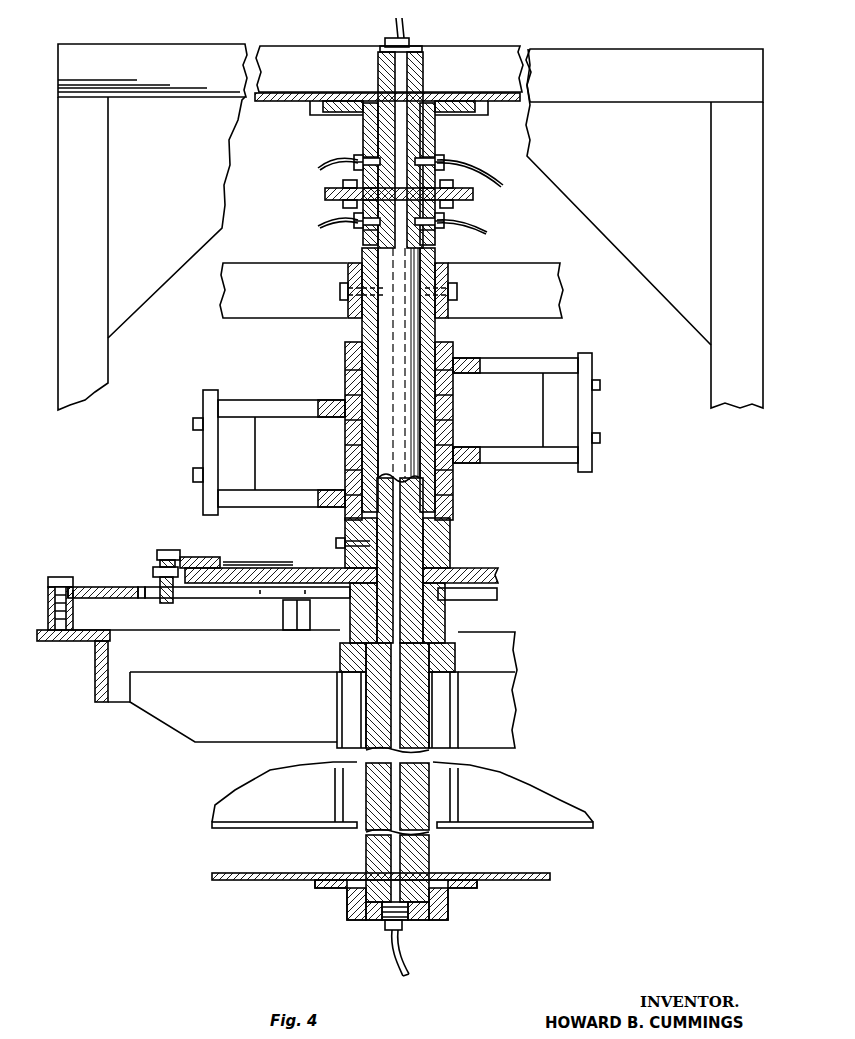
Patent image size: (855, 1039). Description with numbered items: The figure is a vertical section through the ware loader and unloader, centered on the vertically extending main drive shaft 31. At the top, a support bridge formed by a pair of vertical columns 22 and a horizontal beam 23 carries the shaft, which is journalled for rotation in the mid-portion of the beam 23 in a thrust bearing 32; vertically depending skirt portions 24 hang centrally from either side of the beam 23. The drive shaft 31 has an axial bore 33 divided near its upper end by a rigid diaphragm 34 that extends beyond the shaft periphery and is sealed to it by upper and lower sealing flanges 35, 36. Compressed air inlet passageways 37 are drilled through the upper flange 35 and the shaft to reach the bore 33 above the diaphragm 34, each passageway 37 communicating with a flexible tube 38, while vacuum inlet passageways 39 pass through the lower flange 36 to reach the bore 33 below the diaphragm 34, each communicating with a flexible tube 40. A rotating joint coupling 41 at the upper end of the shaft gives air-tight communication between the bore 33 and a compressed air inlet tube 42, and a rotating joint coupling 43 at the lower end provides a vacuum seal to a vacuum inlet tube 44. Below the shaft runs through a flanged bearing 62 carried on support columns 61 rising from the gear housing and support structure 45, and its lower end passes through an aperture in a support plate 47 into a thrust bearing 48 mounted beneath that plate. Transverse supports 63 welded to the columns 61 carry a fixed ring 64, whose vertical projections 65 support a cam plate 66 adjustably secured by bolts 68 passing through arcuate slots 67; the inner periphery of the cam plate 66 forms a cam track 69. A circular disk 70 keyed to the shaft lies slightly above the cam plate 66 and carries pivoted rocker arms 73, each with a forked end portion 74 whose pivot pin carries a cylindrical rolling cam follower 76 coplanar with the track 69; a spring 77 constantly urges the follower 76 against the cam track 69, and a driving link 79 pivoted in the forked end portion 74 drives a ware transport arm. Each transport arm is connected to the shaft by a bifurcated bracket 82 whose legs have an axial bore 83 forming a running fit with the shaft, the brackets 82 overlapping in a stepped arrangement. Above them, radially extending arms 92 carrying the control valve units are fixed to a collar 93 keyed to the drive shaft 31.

The vertical columns 22 is at (108, 366).
The horizontal beam 23 is at (317, 46).
The skirt portions 24 is at (312, 103).
The main drive shaft 31 is at (378, 252).
The thrust bearing 32 is at (364, 128).
The axial bore 33 is at (405, 146).
The rigid diaphragm 34 is at (372, 185).
The upper sealing flange 35 is at (455, 187).
The lower sealing flange 36 is at (462, 202).
The compressed air inlet passageways 37 is at (360, 158).
The flexible tube 38 is at (320, 163).
The vacuum inlet passageways 39 is at (357, 229).
The flexible tube 40 is at (320, 224).
The rotating joint coupling 41 is at (408, 42).
The compressed air inlet tube 42 is at (394, 28).
The rotating joint coupling 43 is at (386, 931).
The vacuum inlet tube 44 is at (407, 960).
The gear housing and support structure 45 is at (213, 818).
The support plate 47 is at (508, 875).
The thrust bearing 48 is at (448, 906).
The support columns 61 is at (337, 718).
The flanged bearing 62 is at (446, 620).
The transverse supports 63 is at (190, 712).
The fixed ring 64 is at (97, 672).
The vertical projections 65 is at (73, 620).
The cam plate 66 is at (126, 587).
The arcuate slots 67 is at (92, 587).
The bolts 68 is at (60, 577).
The cam track 69 is at (142, 600).
The circular disk 70 is at (303, 568).
The rocker arm 73 is at (215, 557).
The forked end portion 74 is at (176, 553).
The cylindrical rolling cam follower 76 is at (176, 603).
The spring 77 is at (266, 562).
The driving link 79 is at (158, 570).
The bifurcated bracket 82 is at (252, 400).
The axial bore 83 is at (360, 342).
The radially extending arm 92 is at (278, 263).
The collar 93 is at (433, 268).